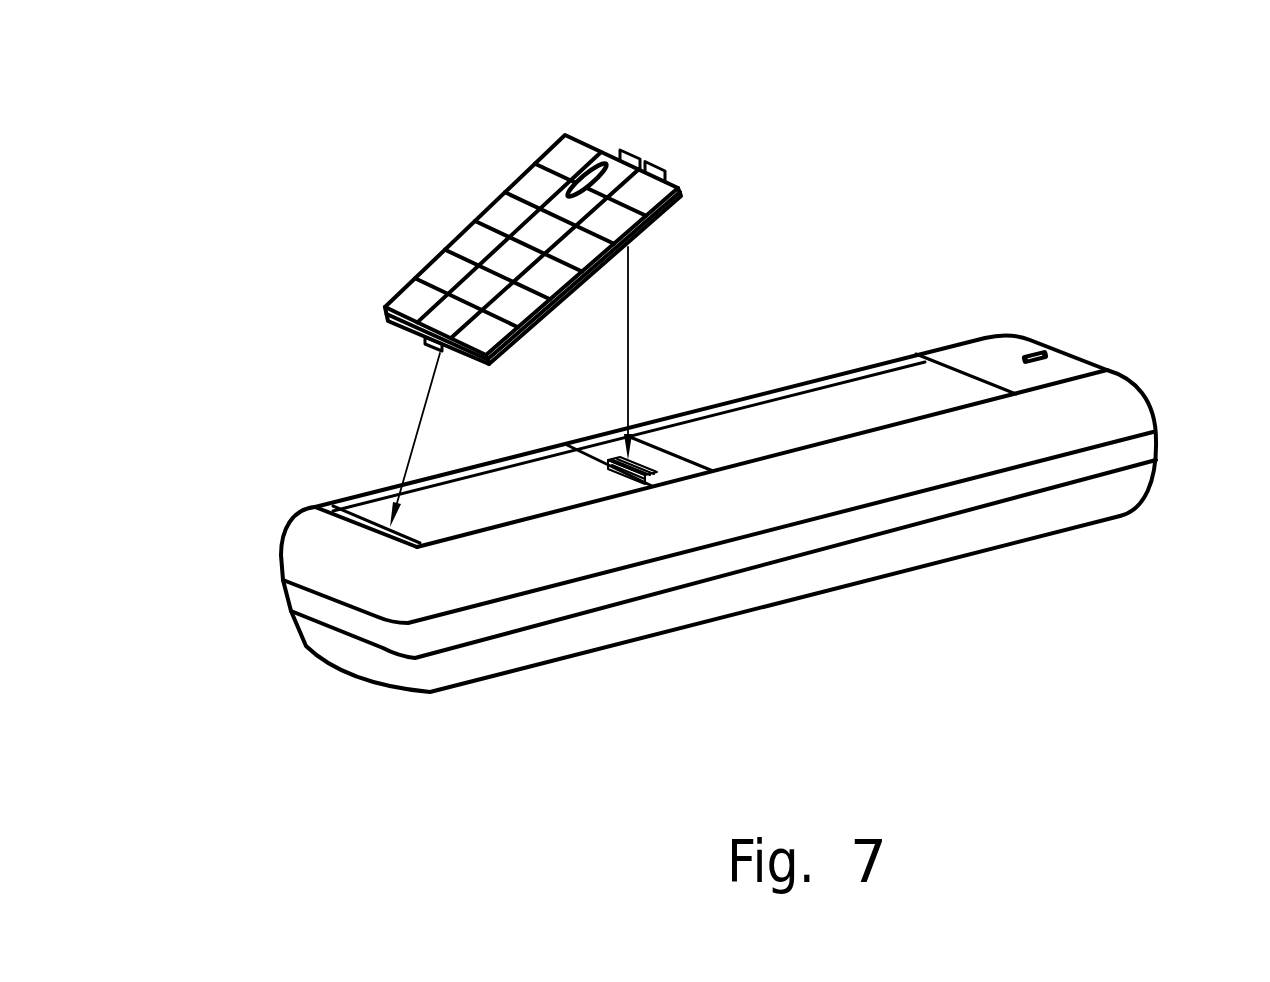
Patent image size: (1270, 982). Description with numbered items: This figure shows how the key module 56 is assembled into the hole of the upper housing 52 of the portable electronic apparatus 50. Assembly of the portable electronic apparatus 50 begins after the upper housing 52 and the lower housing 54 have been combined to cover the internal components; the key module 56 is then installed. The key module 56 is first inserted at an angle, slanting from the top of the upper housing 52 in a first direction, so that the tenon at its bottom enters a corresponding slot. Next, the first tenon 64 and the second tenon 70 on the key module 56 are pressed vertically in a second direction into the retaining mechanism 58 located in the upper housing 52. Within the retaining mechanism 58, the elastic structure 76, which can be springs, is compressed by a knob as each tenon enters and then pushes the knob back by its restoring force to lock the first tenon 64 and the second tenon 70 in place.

The portable electronic apparatus 50 is at (1021, 125).
The upper housing 52 is at (1107, 388).
The lower housing 54 is at (1093, 510).
The key module 56 is at (486, 124).
The retaining mechanism 58 is at (610, 477).
The first tenon 64 is at (629, 150).
The second tenon 70 is at (662, 164).
The elastic structure 76 is at (413, 347).